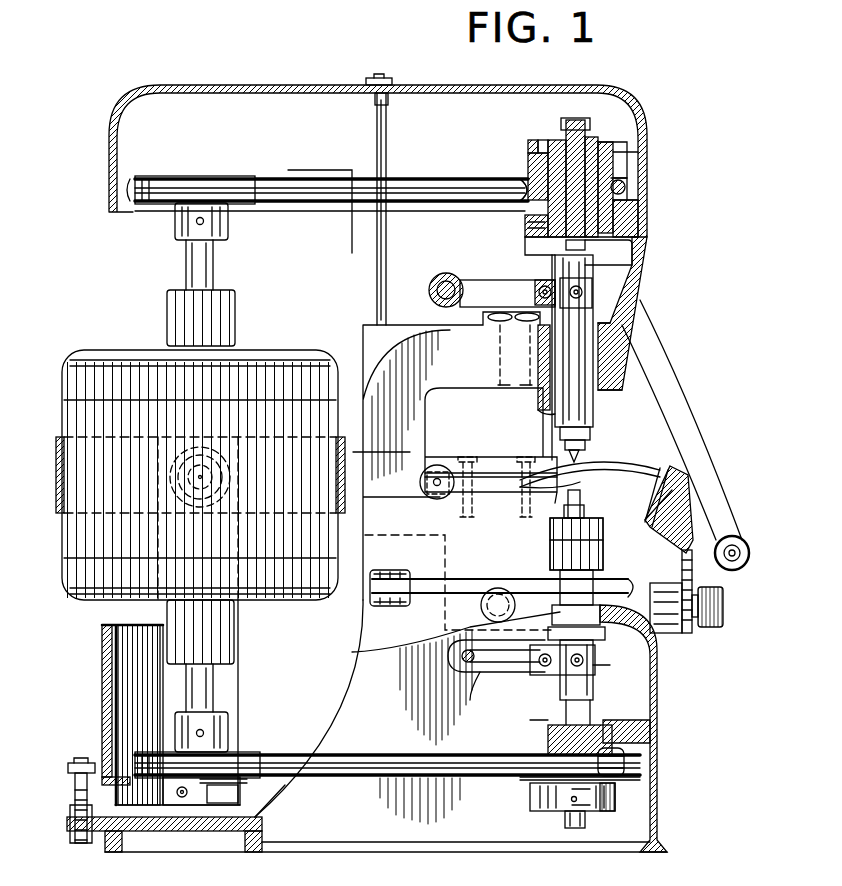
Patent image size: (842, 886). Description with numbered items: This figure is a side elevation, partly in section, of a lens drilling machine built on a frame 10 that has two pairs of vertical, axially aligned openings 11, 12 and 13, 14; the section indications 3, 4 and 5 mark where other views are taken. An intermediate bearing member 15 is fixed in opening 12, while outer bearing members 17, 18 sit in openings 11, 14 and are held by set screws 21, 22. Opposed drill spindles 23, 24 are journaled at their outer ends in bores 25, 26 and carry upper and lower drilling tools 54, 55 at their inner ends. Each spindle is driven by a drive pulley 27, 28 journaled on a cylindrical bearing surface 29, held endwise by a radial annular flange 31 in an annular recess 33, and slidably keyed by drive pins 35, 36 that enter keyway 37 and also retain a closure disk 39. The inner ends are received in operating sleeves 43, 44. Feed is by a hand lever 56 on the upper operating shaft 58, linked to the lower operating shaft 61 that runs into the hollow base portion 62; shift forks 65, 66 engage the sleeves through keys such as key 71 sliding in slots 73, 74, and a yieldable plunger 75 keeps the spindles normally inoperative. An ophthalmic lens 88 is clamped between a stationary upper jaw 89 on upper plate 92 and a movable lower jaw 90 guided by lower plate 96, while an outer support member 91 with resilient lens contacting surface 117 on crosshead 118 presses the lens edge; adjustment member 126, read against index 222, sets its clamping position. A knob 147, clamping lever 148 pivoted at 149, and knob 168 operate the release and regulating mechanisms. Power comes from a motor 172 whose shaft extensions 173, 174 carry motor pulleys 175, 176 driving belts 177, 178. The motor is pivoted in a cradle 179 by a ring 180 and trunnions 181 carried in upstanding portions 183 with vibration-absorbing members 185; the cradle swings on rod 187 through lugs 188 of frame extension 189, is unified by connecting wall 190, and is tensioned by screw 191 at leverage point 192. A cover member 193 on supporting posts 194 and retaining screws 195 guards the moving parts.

The section line 3- 3 is at (462, 293).
The section line 4- 4 is at (108, 171).
The bracket 5 is at (500, 457).
The frame 10 is at (370, 371).
The outer opening 11 is at (600, 221).
The intermediate opening 12 is at (640, 309).
The intermediate opening 13 is at (657, 641).
The outer opening 14 is at (605, 728).
The intermediate bearing member 15 is at (612, 363).
The outer bearing member 17 is at (612, 197).
The outer bearing member 18 is at (547, 735).
The set screw 21 is at (527, 221).
The set screw 22 is at (547, 737).
The drill spindle 23 is at (575, 132).
The drill spindle 24 is at (588, 818).
The bore 25 is at (596, 137).
The bore 26 is at (612, 790).
The drive pulley 27 is at (528, 180).
The drive pulley 28 is at (516, 787).
The cylindrical bearing surface 29 is at (528, 165).
The radial annular flange 31 is at (540, 150).
The annular recess 33 is at (605, 153).
The drive pin 35 is at (532, 140).
The drive pin 36 is at (550, 806).
The keyway 37 is at (561, 130).
The closure disk 39 is at (600, 147).
The operating sleeve 43 is at (585, 263).
The operating sleeve 44 is at (590, 687).
The drilling tool 54 is at (585, 450).
The drilling tool 55 is at (585, 500).
The hand lever 56 is at (680, 385).
The upper operating shaft 58 is at (447, 280).
The lower operating shaft 61 is at (455, 668).
The hollow base portion 62 is at (352, 690).
The shift fork 65 is at (490, 280).
The shift fork 66 is at (487, 676).
The key 71 is at (592, 672).
The slot 73 is at (585, 282).
The slot 74 is at (592, 657).
The plunger 75 is at (500, 322).
The ophthalmic lens 88 is at (650, 469).
The upper jaw 89 is at (590, 470).
The lower jaw 90 is at (582, 482).
The outer support member 91 is at (688, 481).
The upper plate 92 is at (456, 461).
The lower plate 96 is at (503, 491).
The lens contacting surface 117 is at (670, 492).
The crosshead 118 is at (742, 567).
The adjustment member 126 is at (723, 613).
The knob 147 is at (482, 600).
The clamping lever 148 is at (468, 584).
The pivot 149 is at (390, 609).
The knob 168 is at (437, 499).
The motor 172 is at (75, 540).
The shaft extension 173 is at (186, 262).
The shaft extension 174 is at (215, 680).
The motor pulley 175 is at (248, 177).
The motor pulley 176 is at (245, 753).
The belt 177 is at (402, 179).
The belt 178 is at (362, 758).
The motor supporting cradle 179 is at (113, 628).
The ring 180 is at (58, 450).
The trunnion 181 is at (220, 484).
The upstanding portion 183 is at (230, 572).
The vibration-absorbing member 185 is at (216, 470).
The rod 187 is at (190, 792).
The lug 188 is at (235, 781).
The frame extension 189 is at (140, 833).
The connecting wall 190 is at (104, 660).
The screw 191 is at (80, 796).
The leverage point 192 is at (70, 771).
The cover member 193 is at (283, 88).
The supporting post 194 is at (388, 131).
The retaining screw 195 is at (385, 82).
The index 222 is at (705, 581).